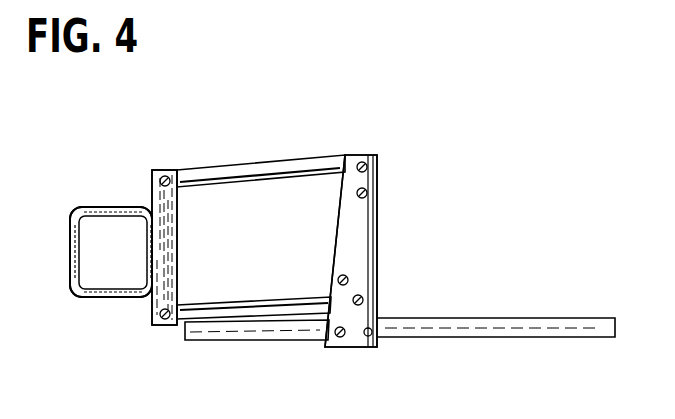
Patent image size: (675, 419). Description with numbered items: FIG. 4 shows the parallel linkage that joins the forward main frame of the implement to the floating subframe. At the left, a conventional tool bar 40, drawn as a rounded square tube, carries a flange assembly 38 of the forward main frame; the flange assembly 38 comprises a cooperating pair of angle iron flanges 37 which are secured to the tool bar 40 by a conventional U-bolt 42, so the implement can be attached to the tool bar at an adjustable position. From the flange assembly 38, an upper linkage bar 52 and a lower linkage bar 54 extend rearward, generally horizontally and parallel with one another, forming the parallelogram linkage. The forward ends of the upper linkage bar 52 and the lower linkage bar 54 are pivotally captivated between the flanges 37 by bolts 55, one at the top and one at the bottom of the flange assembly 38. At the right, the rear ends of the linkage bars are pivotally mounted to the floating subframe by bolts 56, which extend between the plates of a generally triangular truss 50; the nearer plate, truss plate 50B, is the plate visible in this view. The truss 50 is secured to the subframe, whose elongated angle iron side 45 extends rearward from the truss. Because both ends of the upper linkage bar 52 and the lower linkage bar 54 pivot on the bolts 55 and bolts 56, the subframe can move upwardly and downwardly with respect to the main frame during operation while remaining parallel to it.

The angle iron flange 37 is at (172, 231).
The flange assembly 38 is at (152, 158).
The tool bar 40 is at (72, 254).
The U-bolt 42 is at (89, 207).
The subframe side 45 is at (505, 343).
The truss 50 is at (399, 213).
The truss plate 50B is at (358, 268).
The upper linkage bar 52 is at (275, 167).
The lower linkage bar 54 is at (264, 300).
The bolt 55 is at (170, 177).
The bolt 56 is at (360, 163).